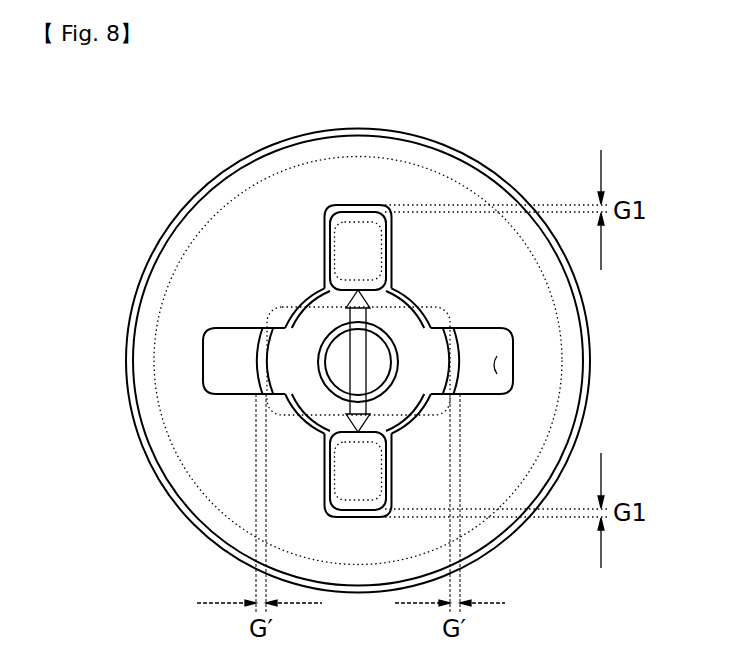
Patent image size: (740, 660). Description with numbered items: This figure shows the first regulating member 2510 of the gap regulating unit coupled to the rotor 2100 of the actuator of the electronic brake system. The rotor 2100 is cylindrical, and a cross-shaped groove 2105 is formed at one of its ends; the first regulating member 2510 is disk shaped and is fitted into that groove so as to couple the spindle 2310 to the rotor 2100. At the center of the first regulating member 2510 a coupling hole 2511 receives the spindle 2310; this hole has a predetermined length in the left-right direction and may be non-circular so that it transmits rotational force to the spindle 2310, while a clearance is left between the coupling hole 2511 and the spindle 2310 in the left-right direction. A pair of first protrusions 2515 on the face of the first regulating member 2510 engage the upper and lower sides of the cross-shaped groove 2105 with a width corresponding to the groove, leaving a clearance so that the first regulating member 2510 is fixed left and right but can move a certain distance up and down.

The rotor 2100 is at (540, 327).
The cross-shaped groove 2105 is at (494, 365).
The spindle 2310 is at (285, 353).
The coupling hole 2511 is at (268, 319).
The first regulating member 2510 is at (228, 378).
The first protrusion 2515 is at (347, 248).